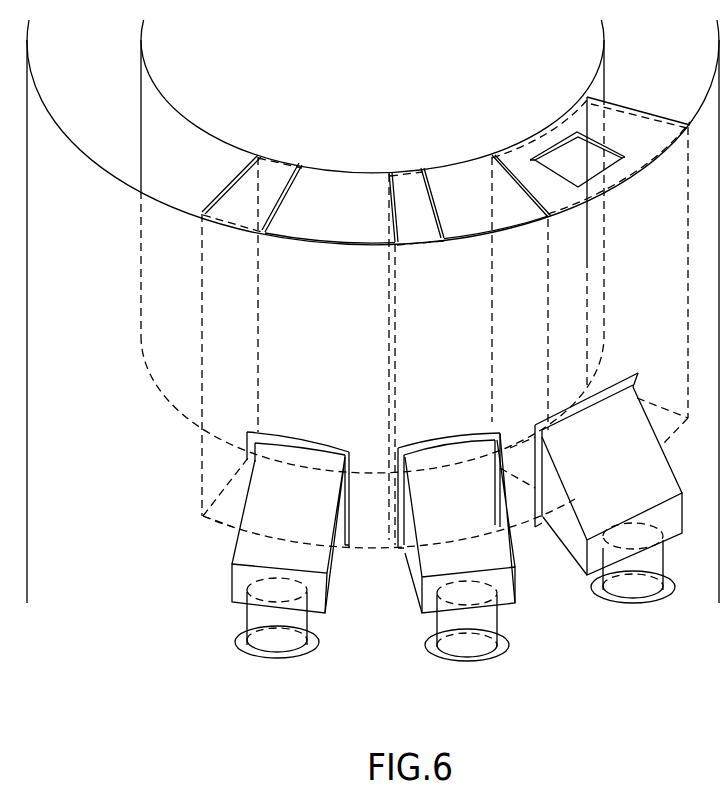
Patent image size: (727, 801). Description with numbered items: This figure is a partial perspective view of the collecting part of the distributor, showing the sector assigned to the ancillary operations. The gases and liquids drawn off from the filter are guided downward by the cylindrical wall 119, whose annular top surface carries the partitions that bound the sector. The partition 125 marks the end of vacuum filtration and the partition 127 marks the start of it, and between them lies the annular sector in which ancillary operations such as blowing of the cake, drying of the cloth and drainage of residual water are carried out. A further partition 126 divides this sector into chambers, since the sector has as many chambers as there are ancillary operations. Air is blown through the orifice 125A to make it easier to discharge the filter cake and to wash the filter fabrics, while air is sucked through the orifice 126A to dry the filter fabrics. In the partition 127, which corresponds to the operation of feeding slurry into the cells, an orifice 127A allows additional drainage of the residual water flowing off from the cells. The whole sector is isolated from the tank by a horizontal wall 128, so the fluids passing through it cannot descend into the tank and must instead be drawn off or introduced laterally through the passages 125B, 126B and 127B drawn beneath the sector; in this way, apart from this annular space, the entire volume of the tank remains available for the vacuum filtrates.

The cylindrical wall 119 is at (594, 82).
The partition 125 is at (245, 210).
The orifice 125A is at (330, 188).
The lateral draw-off/introduction passage 125B is at (260, 637).
The partition 126 is at (387, 175).
The orifice 126A is at (452, 187).
The lateral draw-off/introduction passage 126B is at (450, 642).
The partition 127 is at (523, 167).
The orifice 127A is at (570, 157).
The lateral draw-off/introduction passage 127B is at (633, 585).
The horizontal wall 128 is at (222, 508).